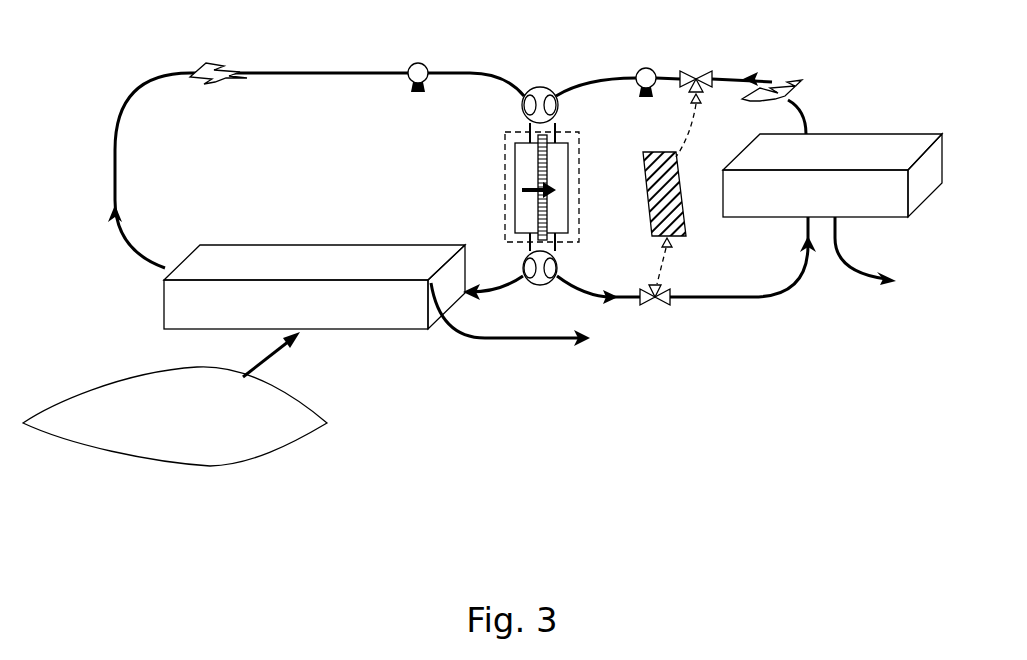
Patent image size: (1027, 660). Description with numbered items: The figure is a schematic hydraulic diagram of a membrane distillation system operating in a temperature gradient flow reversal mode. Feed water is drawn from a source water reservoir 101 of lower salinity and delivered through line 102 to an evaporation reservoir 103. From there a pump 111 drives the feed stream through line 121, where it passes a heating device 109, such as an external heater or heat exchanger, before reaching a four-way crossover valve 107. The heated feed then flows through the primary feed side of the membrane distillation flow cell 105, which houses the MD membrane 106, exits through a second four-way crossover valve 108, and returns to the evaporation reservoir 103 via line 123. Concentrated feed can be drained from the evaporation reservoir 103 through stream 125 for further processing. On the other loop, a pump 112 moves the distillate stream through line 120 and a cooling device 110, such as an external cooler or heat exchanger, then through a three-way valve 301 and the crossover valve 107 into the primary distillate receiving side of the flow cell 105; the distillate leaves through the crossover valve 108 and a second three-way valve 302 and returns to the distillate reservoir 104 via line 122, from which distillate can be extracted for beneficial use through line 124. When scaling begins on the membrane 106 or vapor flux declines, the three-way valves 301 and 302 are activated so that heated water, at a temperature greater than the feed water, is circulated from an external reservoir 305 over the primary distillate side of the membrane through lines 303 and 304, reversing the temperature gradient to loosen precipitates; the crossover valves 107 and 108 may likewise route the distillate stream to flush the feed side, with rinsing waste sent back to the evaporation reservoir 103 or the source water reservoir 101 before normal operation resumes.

The source water reservoir 101 is at (117, 380).
The line 102 is at (283, 350).
The evaporation reservoir 103 is at (300, 243).
The distillate reservoir 104 is at (880, 134).
The membrane distillation flow cell 105 is at (578, 133).
The MD membrane 106 is at (547, 170).
The 4-way crossover valve 107 is at (538, 87).
The 4-way crossover valve 108 is at (523, 262).
The heating device 109 is at (210, 82).
The cooling device 110 is at (785, 85).
The pump 111 is at (408, 66).
The pump 112 is at (636, 72).
The distillate stream line 120 is at (806, 118).
The feed stream line 121 is at (117, 180).
The distillate return line 122 is at (760, 298).
The feed return line 123 is at (498, 292).
The distillate extraction line 124 is at (840, 230).
The concentrate drain stream 125 is at (540, 345).
The 3-way valve 301 is at (690, 68).
The 3-way valve 302 is at (662, 305).
The line 303 is at (692, 132).
The line 304 is at (667, 265).
The external reservoir 305 is at (648, 223).